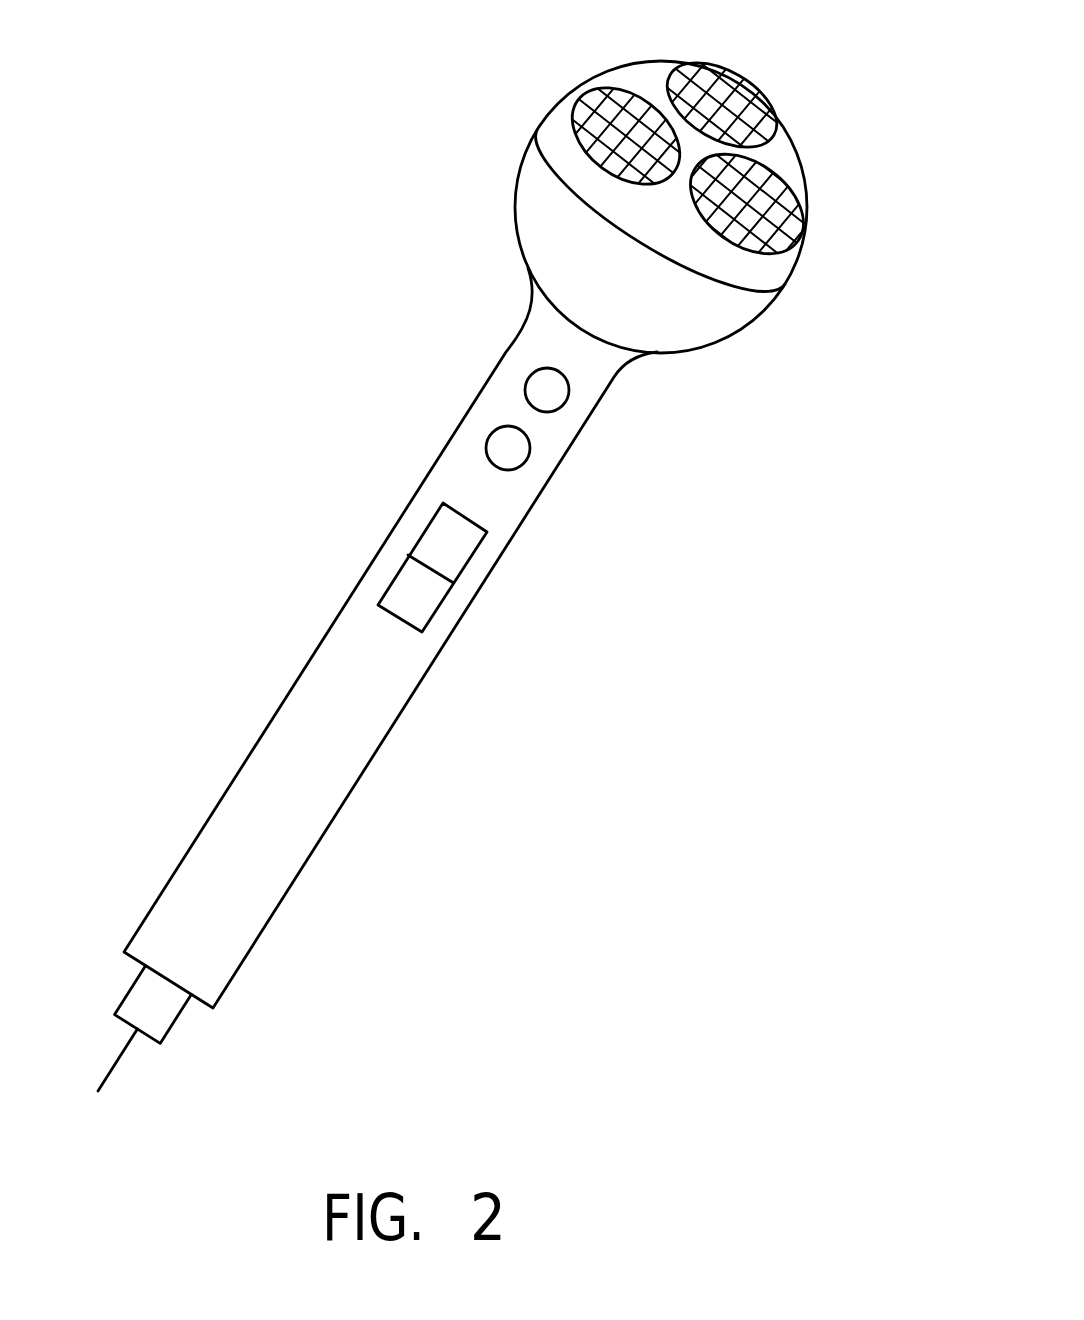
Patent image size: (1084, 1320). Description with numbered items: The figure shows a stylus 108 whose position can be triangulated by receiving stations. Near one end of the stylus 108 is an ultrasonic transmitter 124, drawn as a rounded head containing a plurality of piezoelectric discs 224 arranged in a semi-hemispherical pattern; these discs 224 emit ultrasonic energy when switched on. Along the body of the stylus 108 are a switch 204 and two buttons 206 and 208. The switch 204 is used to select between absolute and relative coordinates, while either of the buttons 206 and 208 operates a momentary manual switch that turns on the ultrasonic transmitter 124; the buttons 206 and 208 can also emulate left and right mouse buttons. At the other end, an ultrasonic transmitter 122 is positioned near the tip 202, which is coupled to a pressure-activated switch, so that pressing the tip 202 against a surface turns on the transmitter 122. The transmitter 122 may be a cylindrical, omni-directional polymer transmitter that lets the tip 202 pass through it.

The stylus 108 is at (245, 310).
The ultrasonic transmitter 124 is at (795, 143).
The piezoelectric discs 224 is at (615, 128).
The button 208 is at (548, 388).
The button 206 is at (516, 453).
The switch 204 is at (422, 530).
The ultrasonic transmitter 122 is at (130, 989).
The tip 202 is at (115, 1063).